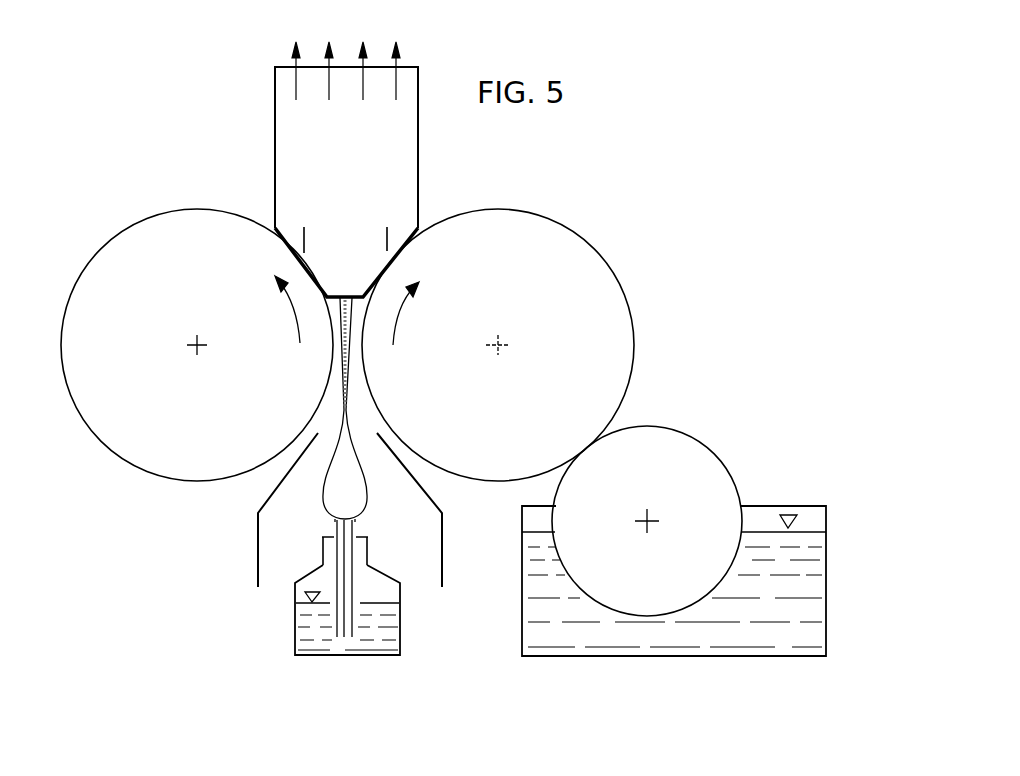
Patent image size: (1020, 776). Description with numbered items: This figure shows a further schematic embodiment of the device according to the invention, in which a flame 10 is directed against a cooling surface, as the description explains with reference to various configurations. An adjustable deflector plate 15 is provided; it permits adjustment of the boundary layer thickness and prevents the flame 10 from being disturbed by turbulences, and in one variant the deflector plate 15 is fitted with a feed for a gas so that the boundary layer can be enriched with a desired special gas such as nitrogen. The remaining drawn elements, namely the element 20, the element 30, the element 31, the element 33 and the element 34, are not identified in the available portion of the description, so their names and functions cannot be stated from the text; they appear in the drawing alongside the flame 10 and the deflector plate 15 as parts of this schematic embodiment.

The flame 10 is at (355, 498).
The adjustable deflector plate 15 is at (256, 545).
The hopper / feed chamber 20 is at (385, 237).
The collecting vessel 30 is at (297, 628).
The rollers 31 is at (155, 230).
The bath roller 33 is at (682, 455).
The liquid bath / tank 34 is at (765, 628).